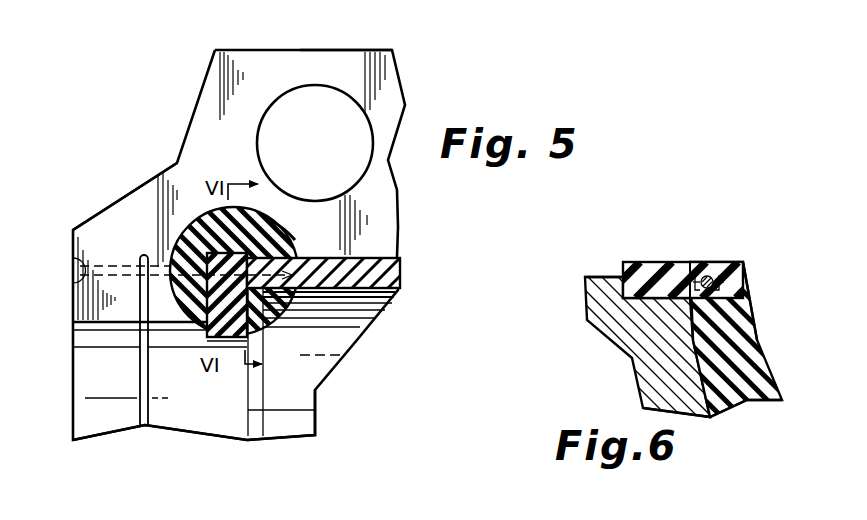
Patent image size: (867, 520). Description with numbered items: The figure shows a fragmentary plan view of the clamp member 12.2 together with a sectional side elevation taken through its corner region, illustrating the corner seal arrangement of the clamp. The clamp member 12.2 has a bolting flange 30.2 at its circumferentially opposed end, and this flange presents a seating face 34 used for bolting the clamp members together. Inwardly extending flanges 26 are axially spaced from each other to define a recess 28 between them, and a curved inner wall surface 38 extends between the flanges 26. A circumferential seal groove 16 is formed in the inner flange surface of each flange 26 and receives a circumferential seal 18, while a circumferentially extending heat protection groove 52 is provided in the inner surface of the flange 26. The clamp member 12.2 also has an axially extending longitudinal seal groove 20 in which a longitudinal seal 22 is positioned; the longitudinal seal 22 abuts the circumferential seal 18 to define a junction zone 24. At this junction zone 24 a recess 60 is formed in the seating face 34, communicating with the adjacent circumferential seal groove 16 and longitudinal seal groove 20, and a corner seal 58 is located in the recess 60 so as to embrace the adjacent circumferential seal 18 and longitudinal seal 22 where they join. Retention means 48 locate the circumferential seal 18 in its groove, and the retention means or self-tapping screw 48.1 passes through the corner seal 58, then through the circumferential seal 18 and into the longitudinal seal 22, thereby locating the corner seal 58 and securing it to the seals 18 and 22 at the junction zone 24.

In FIG. 5, the clamp member 12.2 is at (187, 100).
In FIG. 6, the clamp member 12.2 is at (748, 258).
In FIG. 5, the seating face 34 is at (268, 72).
In FIG. 5, the bolting flange 30.2 is at (337, 50).
In FIG. 5, the corner seal 58 is at (197, 213).
In FIG. 6, the corner seal 58 is at (643, 262).
In FIG. 5, the junction zone 24 is at (172, 216).
In FIG. 5, the retention means 48 is at (76, 286).
In FIG. 5, the heat protection groove 52 is at (145, 345).
In FIG. 5, the inwardly extending flange 26 is at (122, 410).
In FIG. 6, the inwardly extending flange 26 is at (667, 355).
In FIG. 5, the circumferential seal 18 is at (213, 418).
In FIG. 6, the circumferential seal 18 is at (757, 340).
In FIG. 5, the recess 60 is at (295, 238).
In FIG. 6, the recess 60 is at (640, 303).
In FIG. 5, the longitudinal seal 22 is at (365, 262).
In FIG. 6, the longitudinal seal 22 is at (712, 262).
In FIG. 5, the longitudinal seal groove 20 is at (400, 294).
In FIG. 5, the recess 28 is at (340, 327).
In FIG. 5, the inner wall surface 38 is at (322, 363).
In FIG. 5, the circumferential seal groove 16 is at (252, 412).
In FIG. 6, the circumferential seal groove 16 is at (712, 413).
In FIG. 6, the self-tapping screw 48.1 is at (747, 283).